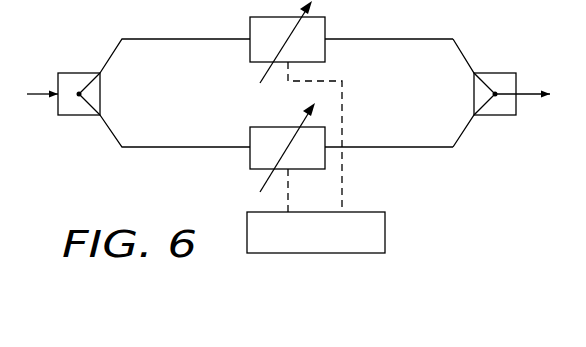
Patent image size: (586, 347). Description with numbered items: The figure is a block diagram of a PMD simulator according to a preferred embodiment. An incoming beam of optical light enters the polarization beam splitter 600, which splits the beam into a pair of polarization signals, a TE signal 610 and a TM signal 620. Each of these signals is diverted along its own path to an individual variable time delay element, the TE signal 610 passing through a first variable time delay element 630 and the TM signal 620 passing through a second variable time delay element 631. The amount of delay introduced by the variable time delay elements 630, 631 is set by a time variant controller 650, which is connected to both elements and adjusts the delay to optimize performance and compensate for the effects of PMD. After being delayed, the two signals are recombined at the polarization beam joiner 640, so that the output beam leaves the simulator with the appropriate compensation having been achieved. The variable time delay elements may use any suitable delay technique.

The polarization beam splitter 600 is at (80, 116).
The TE signal 610 is at (185, 40).
The TM signal 620 is at (155, 148).
The variable time delay element 630 is at (325, 28).
The variable time delay element 631 is at (250, 158).
The polarization beam joiner 640 is at (497, 116).
The time variant controller 650 is at (385, 232).